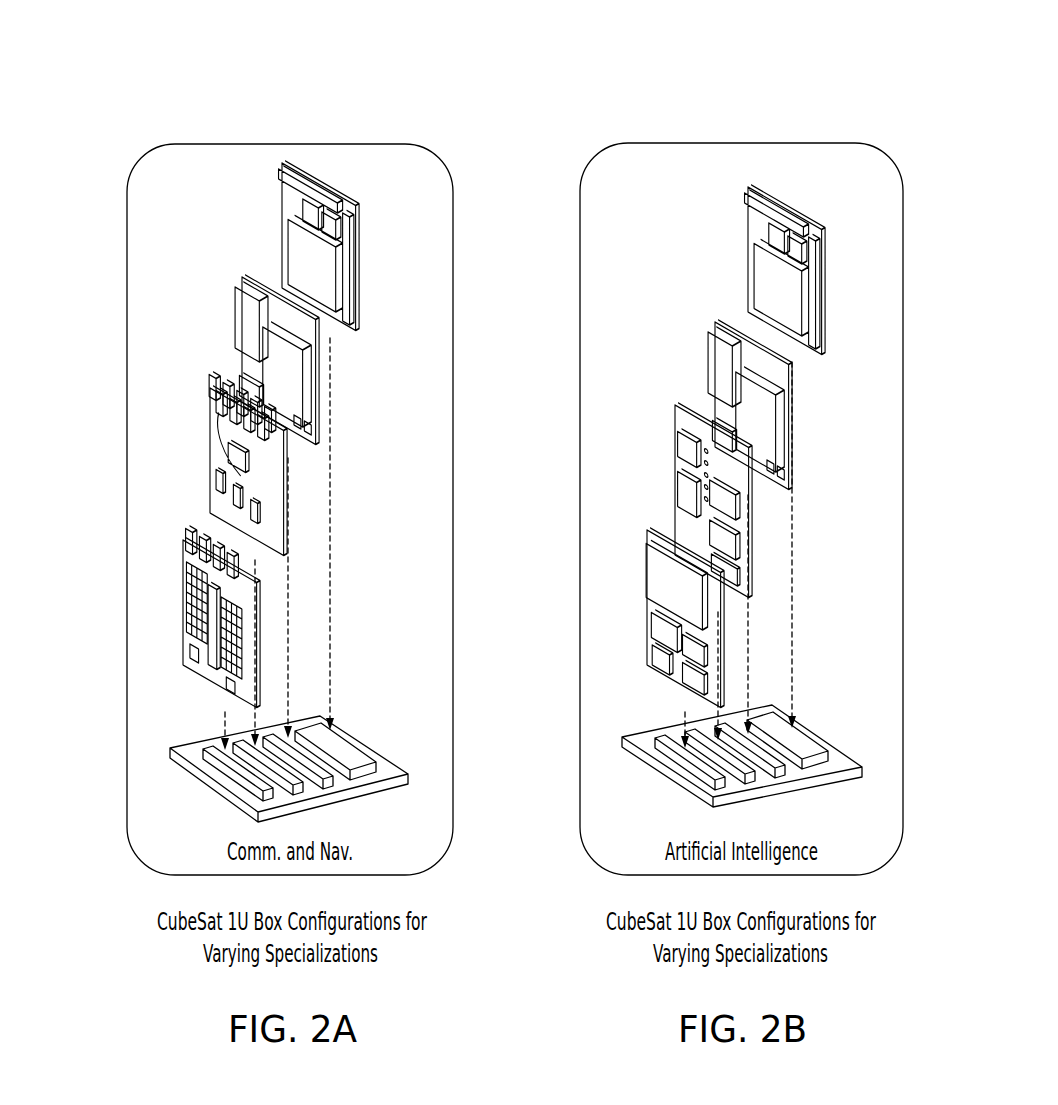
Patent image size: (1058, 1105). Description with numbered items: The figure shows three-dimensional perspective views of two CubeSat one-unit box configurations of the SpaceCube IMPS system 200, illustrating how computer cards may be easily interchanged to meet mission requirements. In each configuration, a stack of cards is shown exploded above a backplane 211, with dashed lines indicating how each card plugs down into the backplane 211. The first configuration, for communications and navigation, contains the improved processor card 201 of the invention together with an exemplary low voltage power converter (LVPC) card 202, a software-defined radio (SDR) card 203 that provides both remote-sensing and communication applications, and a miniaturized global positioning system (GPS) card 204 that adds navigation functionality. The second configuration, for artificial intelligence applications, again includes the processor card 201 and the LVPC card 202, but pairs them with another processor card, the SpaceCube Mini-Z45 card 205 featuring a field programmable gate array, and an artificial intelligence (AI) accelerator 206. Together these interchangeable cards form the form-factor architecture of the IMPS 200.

In FIG. 2A, the SpaceCube IMPS system 200 is at (158, 353).
In FIG. 2B, the SpaceCube IMPS system 200 is at (842, 102).
In FIG. 2A, the processor card 201 is at (357, 250).
In FIG. 2B, the processor card 201 is at (822, 250).
In FIG. 2A, the low voltage power converter (LVPC) card 202 is at (333, 352).
In FIG. 2B, the low voltage power converter (LVPC) card 202 is at (712, 352).
In FIG. 2A, the software-defined radio (SDR) card 203 is at (210, 472).
In FIG. 2A, the global positioning system (GPS) card 204 is at (183, 612).
In FIG. 2B, the SpaceCube Mini-Z45 card 205 is at (675, 468).
In FIG. 2B, the artificial intelligence (AI) accelerator 206 is at (645, 600).
In FIG. 2A, the backplane 211 is at (180, 762).
In FIG. 2B, the backplane 211 is at (650, 762).